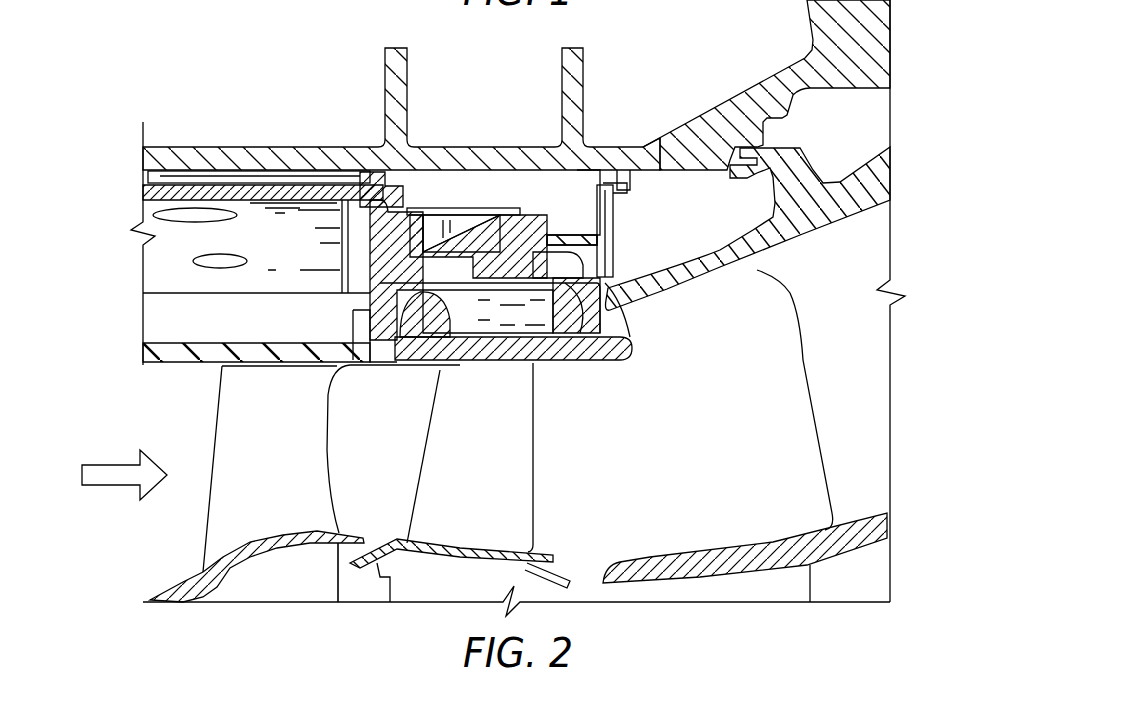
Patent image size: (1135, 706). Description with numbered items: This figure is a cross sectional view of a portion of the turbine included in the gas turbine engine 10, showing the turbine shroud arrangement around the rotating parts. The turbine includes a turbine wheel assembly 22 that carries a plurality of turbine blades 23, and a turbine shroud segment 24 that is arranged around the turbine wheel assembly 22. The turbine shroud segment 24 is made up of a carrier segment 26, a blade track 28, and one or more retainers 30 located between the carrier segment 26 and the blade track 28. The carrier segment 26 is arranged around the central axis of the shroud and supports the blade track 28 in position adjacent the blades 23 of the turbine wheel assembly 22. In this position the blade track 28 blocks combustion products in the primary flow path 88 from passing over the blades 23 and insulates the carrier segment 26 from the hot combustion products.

The gas turbine engine 10 is at (633, 74).
The turbine wheel assembly 22 is at (560, 546).
The turbine blades 23 is at (460, 440).
The turbine shroud segment 24 is at (632, 216).
The carrier segment 26 is at (369, 257).
The blade track 28 is at (608, 317).
The retainers 30 is at (557, 235).
The primary flow path 88 is at (103, 458).